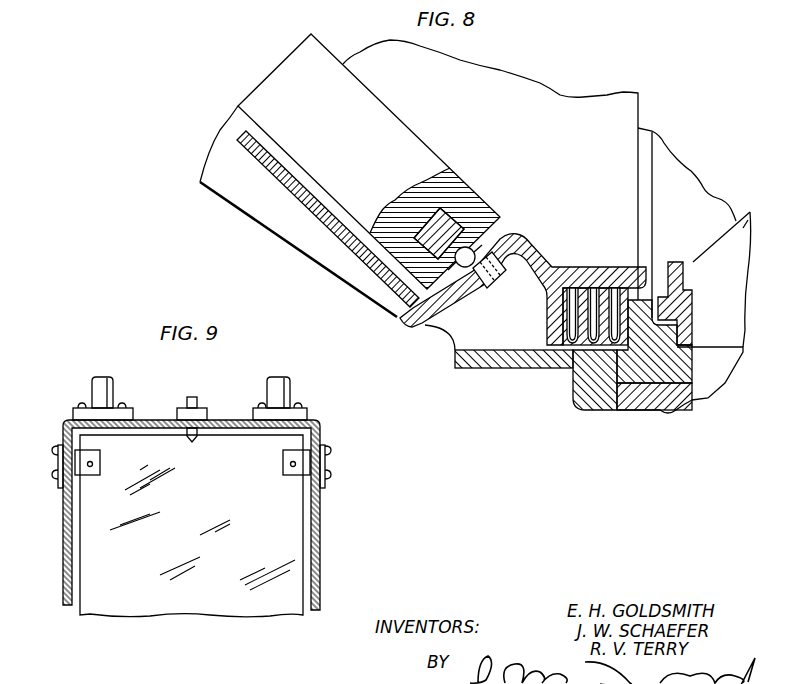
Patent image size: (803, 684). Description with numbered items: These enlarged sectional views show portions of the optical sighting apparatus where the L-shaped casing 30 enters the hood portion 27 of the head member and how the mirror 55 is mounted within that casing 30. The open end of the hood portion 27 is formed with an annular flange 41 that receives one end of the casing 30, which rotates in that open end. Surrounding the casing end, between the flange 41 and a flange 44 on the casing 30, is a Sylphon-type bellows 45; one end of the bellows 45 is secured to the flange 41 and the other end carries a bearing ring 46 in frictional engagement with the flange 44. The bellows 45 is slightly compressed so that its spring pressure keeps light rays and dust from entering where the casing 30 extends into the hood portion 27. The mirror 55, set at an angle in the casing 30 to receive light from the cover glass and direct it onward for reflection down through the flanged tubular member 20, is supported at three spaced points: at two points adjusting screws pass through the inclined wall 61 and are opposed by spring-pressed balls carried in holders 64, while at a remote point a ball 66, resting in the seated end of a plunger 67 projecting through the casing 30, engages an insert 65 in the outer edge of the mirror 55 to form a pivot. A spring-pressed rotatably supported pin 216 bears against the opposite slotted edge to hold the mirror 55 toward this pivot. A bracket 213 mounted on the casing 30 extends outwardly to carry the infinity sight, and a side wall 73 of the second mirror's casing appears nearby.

In FIG. 8, the flanged tubular member 20 is at (660, 408).
In FIG. 8, the hood portion 27 is at (670, 173).
In FIG. 8, the casing 30 is at (558, 103).
In FIG. 9, the casing 30 is at (320, 503).
In FIG. 8, the annular flange 41 is at (640, 305).
In FIG. 8, the flange 44 is at (548, 330).
In FIG. 8, the bellows 45 is at (582, 350).
In FIG. 8, the bearing ring 46 is at (566, 311).
In FIG. 8, the mirror 55 is at (417, 159).
In FIG. 9, the mirror 55 is at (293, 528).
In FIG. 8, the inclined wall 61 is at (262, 181).
In FIG. 8, the insert 65 is at (468, 226).
In FIG. 8, the ball 66 is at (487, 248).
In FIG. 8, the plunger 67 is at (500, 283).
In FIG. 8, the side wall 73 is at (751, 212).
In FIG. 9, the bracket 213 is at (90, 384).
In FIG. 9, the spring-pressed rotatably supported pin 216 is at (197, 404).
In FIG. 9, the holder 64 is at (102, 464).